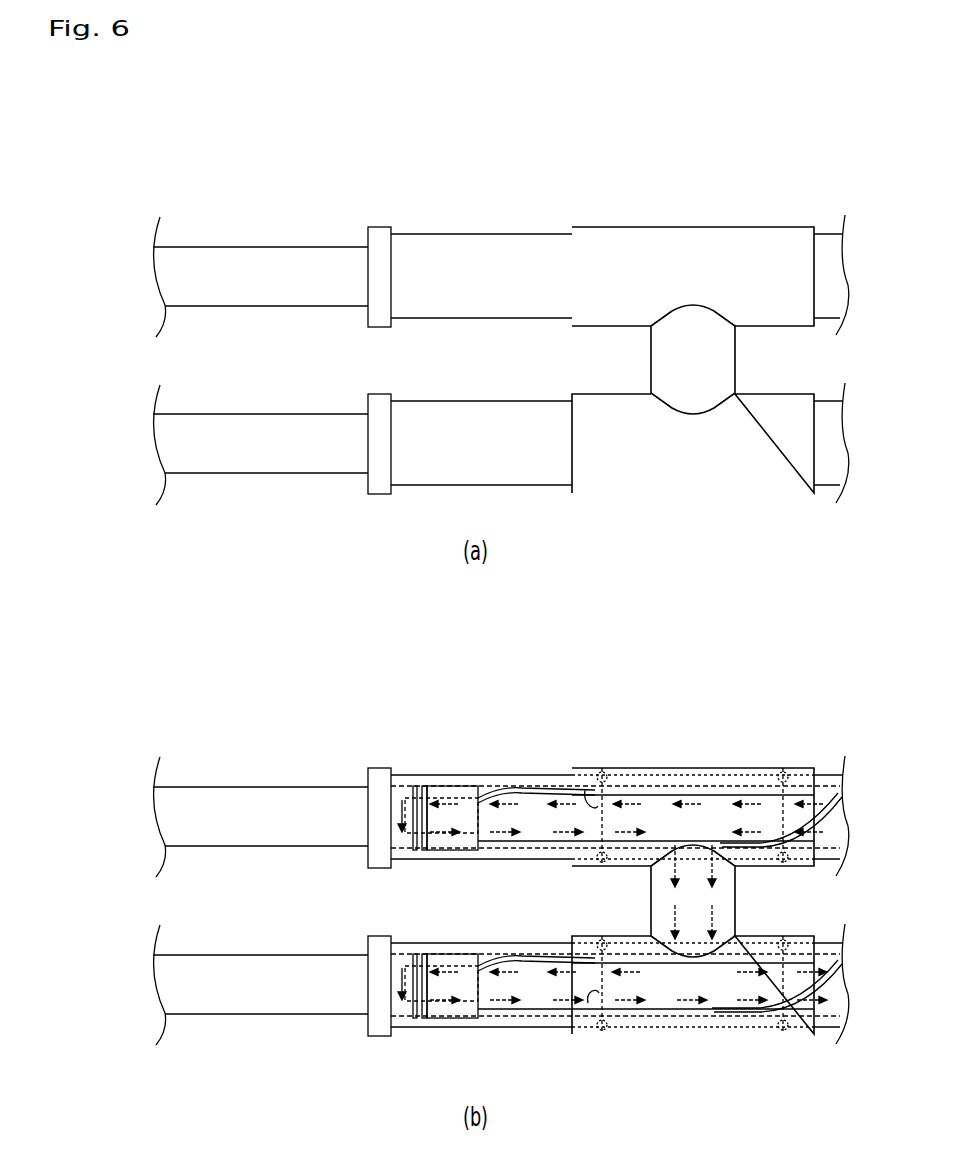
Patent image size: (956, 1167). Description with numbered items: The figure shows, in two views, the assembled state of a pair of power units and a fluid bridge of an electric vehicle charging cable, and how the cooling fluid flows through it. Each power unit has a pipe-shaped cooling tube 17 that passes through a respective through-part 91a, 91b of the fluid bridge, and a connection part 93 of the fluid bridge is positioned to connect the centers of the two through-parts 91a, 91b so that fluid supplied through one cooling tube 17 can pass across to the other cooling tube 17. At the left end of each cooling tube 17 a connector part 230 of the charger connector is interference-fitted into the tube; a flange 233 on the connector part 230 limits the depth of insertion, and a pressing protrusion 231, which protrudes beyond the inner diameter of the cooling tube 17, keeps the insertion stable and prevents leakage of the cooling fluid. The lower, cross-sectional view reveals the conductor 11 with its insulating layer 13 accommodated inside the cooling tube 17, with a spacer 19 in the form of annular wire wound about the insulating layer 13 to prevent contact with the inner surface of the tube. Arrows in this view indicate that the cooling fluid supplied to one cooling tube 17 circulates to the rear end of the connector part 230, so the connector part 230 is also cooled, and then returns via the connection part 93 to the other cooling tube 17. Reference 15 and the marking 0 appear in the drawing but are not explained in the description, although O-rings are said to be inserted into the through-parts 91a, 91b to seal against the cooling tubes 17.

The connector part 230 is at (300, 252).
The flange 233 is at (378, 228).
The cooling tube 17 is at (534, 246).
The through-part 91a is at (770, 323).
The through-part 91b is at (803, 398).
The connection part 93 is at (657, 362).
The insulating layer 13 is at (657, 800).
The inner pipe 15 is at (740, 788).
The pressing protrusion 231 is at (413, 785).
The conductor 11 is at (470, 798).
The spacer 19 is at (530, 782).
The O-ring 0 is at (585, 795).